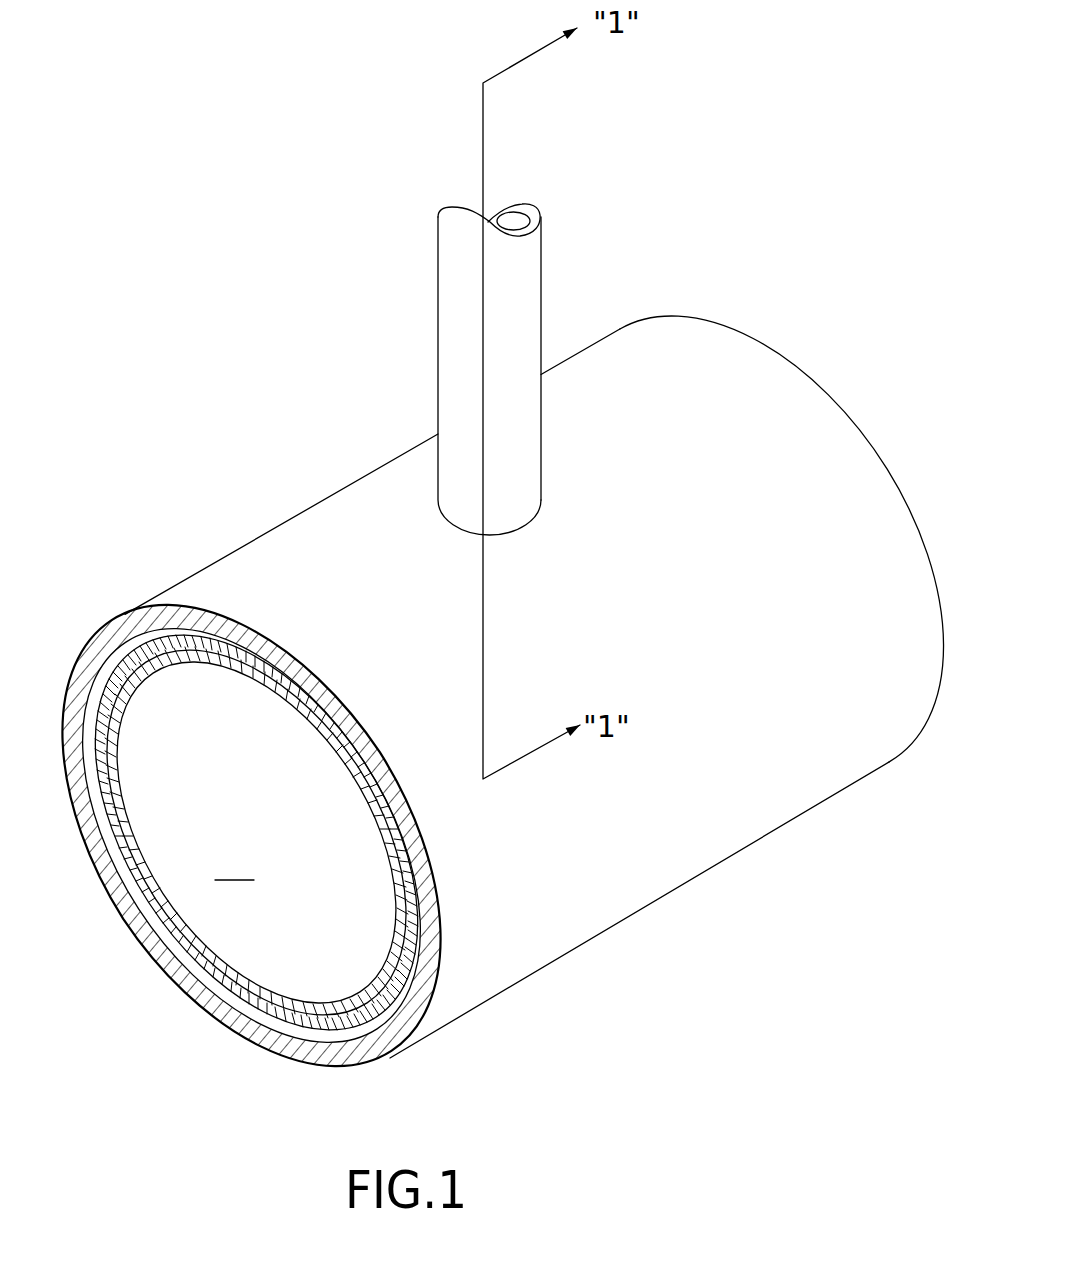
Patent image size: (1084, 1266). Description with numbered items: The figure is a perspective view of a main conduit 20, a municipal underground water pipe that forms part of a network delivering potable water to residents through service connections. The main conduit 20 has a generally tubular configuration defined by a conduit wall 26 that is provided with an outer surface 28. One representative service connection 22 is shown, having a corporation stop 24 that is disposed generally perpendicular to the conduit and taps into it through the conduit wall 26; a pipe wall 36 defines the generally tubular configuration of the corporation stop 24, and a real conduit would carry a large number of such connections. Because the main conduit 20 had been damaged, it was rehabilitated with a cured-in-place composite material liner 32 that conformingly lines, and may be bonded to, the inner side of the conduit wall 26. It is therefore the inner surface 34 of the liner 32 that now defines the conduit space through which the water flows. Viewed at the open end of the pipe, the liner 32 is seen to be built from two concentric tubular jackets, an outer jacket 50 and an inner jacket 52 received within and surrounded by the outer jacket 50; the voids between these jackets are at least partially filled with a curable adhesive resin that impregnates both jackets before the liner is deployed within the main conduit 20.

The main conduit 20 is at (189, 368).
The service connection 22 is at (590, 238).
The corporation stop 24 is at (437, 357).
The conduit wall 26 is at (733, 367).
The outer surface 28 is at (677, 535).
The liner 32 is at (132, 762).
The inner surface 34 is at (357, 997).
The pipe wall 36 is at (437, 238).
The outer jacket 50 is at (163, 955).
The inner jacket 52 is at (123, 827).